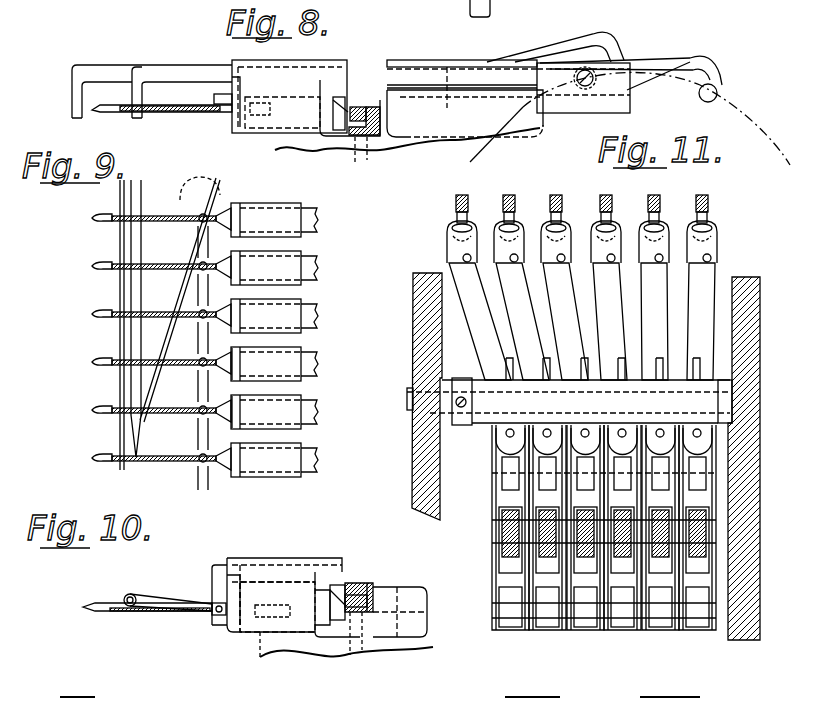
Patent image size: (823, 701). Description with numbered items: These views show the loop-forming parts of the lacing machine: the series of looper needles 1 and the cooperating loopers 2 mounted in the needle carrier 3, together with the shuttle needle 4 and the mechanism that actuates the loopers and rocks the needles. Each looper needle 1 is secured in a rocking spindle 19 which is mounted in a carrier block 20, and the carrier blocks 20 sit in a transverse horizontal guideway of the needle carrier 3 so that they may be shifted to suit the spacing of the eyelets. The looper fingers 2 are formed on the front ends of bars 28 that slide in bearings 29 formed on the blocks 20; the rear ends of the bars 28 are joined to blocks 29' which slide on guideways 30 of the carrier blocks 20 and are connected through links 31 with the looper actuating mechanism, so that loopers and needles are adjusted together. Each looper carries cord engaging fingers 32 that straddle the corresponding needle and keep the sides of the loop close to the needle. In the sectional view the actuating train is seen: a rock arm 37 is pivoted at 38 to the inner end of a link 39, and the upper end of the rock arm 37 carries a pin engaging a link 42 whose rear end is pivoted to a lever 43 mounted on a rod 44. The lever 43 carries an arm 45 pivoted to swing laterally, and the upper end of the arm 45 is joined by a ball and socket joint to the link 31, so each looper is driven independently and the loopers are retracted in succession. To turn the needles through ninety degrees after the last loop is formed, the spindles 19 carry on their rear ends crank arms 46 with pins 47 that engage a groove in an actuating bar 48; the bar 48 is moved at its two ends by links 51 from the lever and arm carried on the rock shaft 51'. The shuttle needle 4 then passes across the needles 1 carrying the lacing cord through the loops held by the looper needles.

In FIG. 8, the looper needle 1 is at (150, 116).
In FIG. 9, the looper needle 1 is at (100, 224).
In FIG. 10, the looper needle 1 is at (88, 604).
In FIG. 8, the looper 2 is at (80, 65).
In FIG. 11, the needle carrier 3 is at (745, 336).
In FIG. 9, the shuttle needle 4 is at (136, 204).
In FIG. 10, the shuttle needle 4 is at (125, 596).
In FIG. 8, the rocking spindle 19 is at (282, 112).
In FIG. 10, the rocking spindle 19 is at (280, 612).
In FIG. 8, the carrier block 20 is at (465, 113).
In FIG. 9, the bar 28 is at (318, 222).
In FIG. 10, the bar 28 is at (352, 572).
In FIG. 8, the bearing 29 is at (278, 79).
In FIG. 9, the bearing 29 is at (291, 388).
In FIG. 10, the bearing 29 is at (285, 577).
In FIG. 8, the block 29' is at (583, 98).
In FIG. 8, the guideway 30 is at (486, 100).
In FIG. 10, the guideway 30 is at (415, 595).
In FIG. 8, the link 31 is at (625, 42).
In FIG. 11, the link 31 is at (468, 197).
In FIG. 8, the cord engaging finger 32 is at (222, 98).
In FIG. 10, the cord engaging finger 32 is at (215, 617).
In FIG. 11, the rock arm 37 is at (493, 590).
In FIG. 11, the pivot 38 is at (499, 537).
In FIG. 11, the link 39 is at (575, 520).
In FIG. 11, the link 42 is at (503, 463).
In FIG. 11, the lever 43 is at (492, 455).
In FIG. 11, the rod 44 is at (407, 395).
In FIG. 11, the arm 45 is at (650, 292).
In FIG. 8, the crank arm 46 is at (360, 125).
In FIG. 10, the crank arm 46 is at (340, 620).
In FIG. 8, the pin 47 is at (362, 107).
In FIG. 10, the pin 47 is at (370, 605).
In FIG. 8, the actuating bar 48 is at (376, 133).
In FIG. 10, the actuating bar 48 is at (370, 585).
In FIG. 8, the link 51 is at (394, 90).
In FIG. 10, the link 51 is at (360, 656).
In FIG. 8, the rock shaft 51' is at (513, 12).